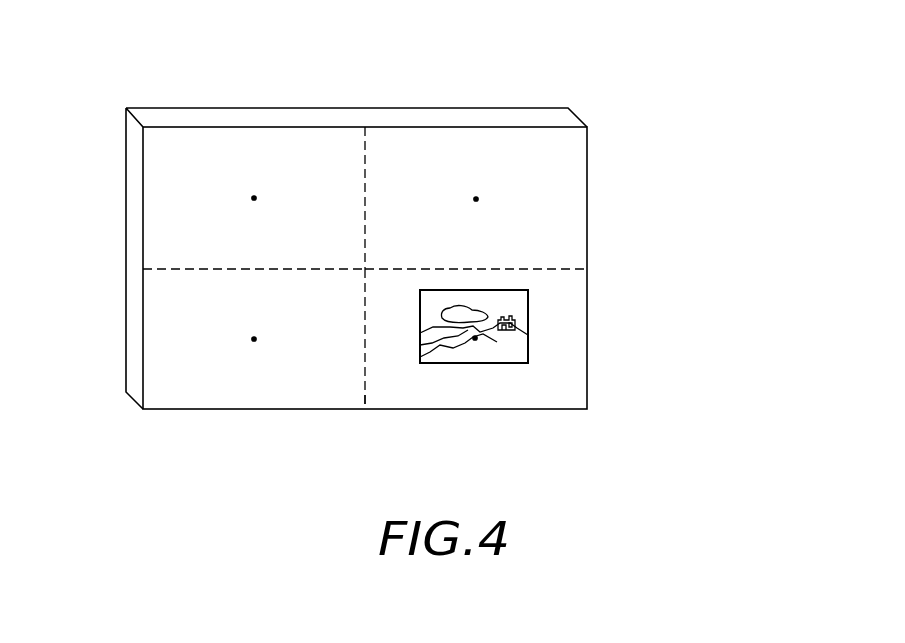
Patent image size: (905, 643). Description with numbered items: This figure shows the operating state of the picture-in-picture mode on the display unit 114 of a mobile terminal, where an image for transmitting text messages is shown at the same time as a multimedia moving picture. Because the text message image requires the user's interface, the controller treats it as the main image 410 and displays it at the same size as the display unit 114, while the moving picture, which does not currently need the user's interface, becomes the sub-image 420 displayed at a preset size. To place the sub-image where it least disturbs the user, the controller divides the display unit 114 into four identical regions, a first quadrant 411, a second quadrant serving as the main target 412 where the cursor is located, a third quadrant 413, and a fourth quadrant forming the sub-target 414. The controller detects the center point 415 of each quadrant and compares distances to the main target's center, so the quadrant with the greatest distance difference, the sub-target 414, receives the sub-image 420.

The display unit 114 is at (525, 68).
The main image 410 is at (305, 87).
The first quadrant 411 is at (476, 253).
The main target 412 is at (254, 198).
The third quadrant 413 is at (341, 339).
The sub-target 414 is at (471, 393).
The center point 415 is at (254, 198).
The sub-image 420 is at (532, 324).